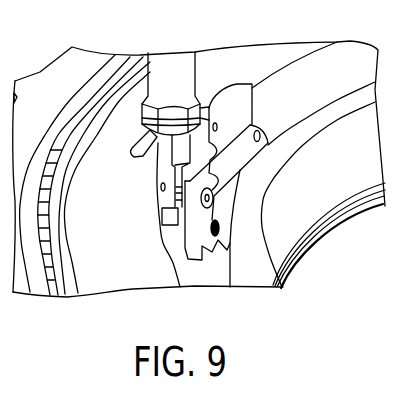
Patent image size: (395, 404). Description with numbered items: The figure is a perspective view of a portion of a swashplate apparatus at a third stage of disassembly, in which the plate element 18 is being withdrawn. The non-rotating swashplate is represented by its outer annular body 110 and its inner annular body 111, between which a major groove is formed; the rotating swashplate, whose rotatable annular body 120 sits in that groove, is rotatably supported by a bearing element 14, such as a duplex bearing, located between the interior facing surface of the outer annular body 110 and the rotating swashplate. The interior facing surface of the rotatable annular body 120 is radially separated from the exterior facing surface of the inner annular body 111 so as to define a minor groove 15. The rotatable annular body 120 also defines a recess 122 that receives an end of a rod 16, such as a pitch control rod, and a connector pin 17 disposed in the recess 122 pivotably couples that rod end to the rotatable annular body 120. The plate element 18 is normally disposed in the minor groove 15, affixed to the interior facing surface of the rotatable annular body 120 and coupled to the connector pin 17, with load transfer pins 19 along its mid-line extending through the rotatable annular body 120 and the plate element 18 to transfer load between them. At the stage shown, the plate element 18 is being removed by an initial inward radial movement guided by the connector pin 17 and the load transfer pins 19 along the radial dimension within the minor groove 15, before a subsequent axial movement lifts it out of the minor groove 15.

The bearing element 14 is at (76, 297).
The minor groove 15 is at (198, 269).
The rod 16 is at (163, 67).
The connector pin 17 is at (157, 196).
The plate element 18 is at (228, 190).
The load transfer pins 19 is at (165, 219).
The outer annular body 110 is at (25, 293).
The inner annular body 111 is at (257, 283).
The rotatable annular body 120 is at (134, 288).
The recess 122 is at (143, 151).